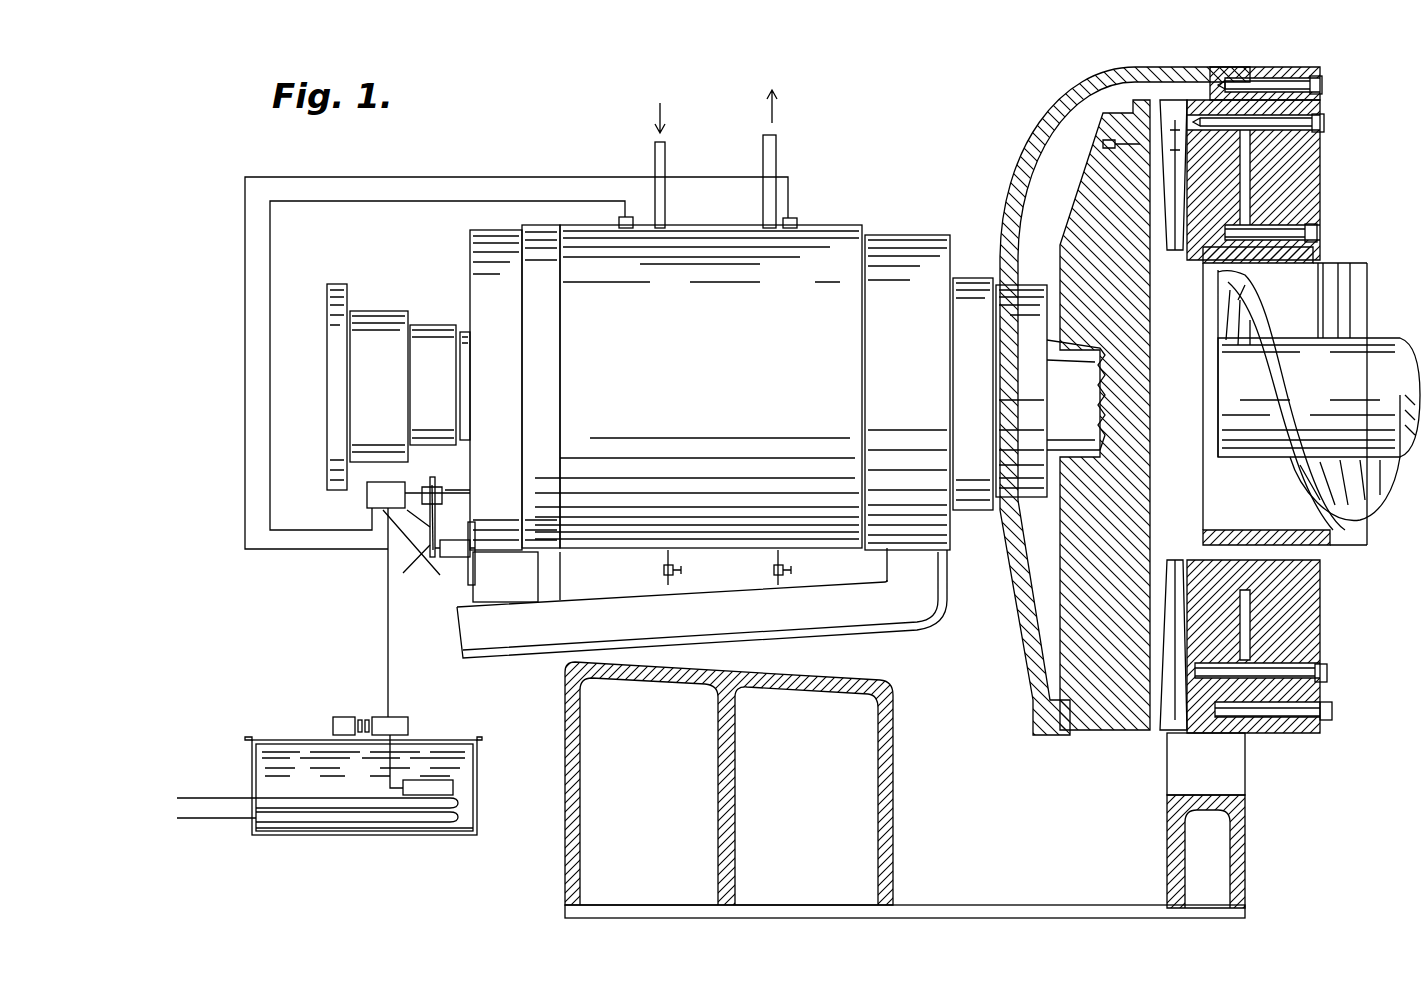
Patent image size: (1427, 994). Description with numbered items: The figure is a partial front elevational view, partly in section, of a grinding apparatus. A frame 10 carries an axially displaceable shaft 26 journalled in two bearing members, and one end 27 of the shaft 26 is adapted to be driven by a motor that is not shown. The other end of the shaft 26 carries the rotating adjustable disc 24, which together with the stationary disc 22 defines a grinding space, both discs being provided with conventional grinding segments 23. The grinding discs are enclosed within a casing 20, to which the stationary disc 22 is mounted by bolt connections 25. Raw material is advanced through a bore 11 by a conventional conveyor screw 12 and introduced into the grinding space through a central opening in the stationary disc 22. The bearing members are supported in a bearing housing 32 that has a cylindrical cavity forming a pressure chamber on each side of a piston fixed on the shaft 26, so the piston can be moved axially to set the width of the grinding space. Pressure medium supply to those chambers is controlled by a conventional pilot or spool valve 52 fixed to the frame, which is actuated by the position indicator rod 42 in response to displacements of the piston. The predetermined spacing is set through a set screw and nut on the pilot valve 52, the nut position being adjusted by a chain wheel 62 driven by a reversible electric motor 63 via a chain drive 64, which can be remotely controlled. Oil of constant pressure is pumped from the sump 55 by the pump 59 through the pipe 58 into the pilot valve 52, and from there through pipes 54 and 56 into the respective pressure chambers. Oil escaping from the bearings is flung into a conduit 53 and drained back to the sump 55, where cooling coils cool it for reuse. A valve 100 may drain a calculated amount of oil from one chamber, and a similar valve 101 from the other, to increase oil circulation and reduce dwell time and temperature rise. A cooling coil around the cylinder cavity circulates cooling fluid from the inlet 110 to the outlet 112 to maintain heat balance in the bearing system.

The frame 10 is at (565, 810).
The bore 11 is at (1305, 292).
The conveyor screw 12 is at (1375, 490).
The casing 20 is at (1068, 105).
The stationary disc 22 is at (1235, 80).
The grinding segments 23 is at (1172, 100).
The rotating adjustable disc 24 is at (1070, 170).
The bolt connections 25 is at (1326, 123).
The shaft 26 is at (1075, 366).
The shaft end 27 is at (378, 311).
The bearing housing 32 is at (858, 232).
The position indicator rod 42 is at (455, 490).
The pilot valve 52 is at (367, 494).
The conduit 53 is at (830, 625).
The pipe 54 is at (612, 228).
The sump 55 is at (252, 760).
The pipe 56 is at (797, 218).
The pipe 58 is at (388, 632).
The pump 59 is at (408, 720).
The chain wheel 62 is at (435, 480).
The reversible electric motor 63 is at (447, 575).
The chain drive 64 is at (430, 555).
The valve 100 is at (770, 566).
The valve 101 is at (660, 570).
The inlet 110 is at (655, 148).
The outlet 112 is at (776, 148).